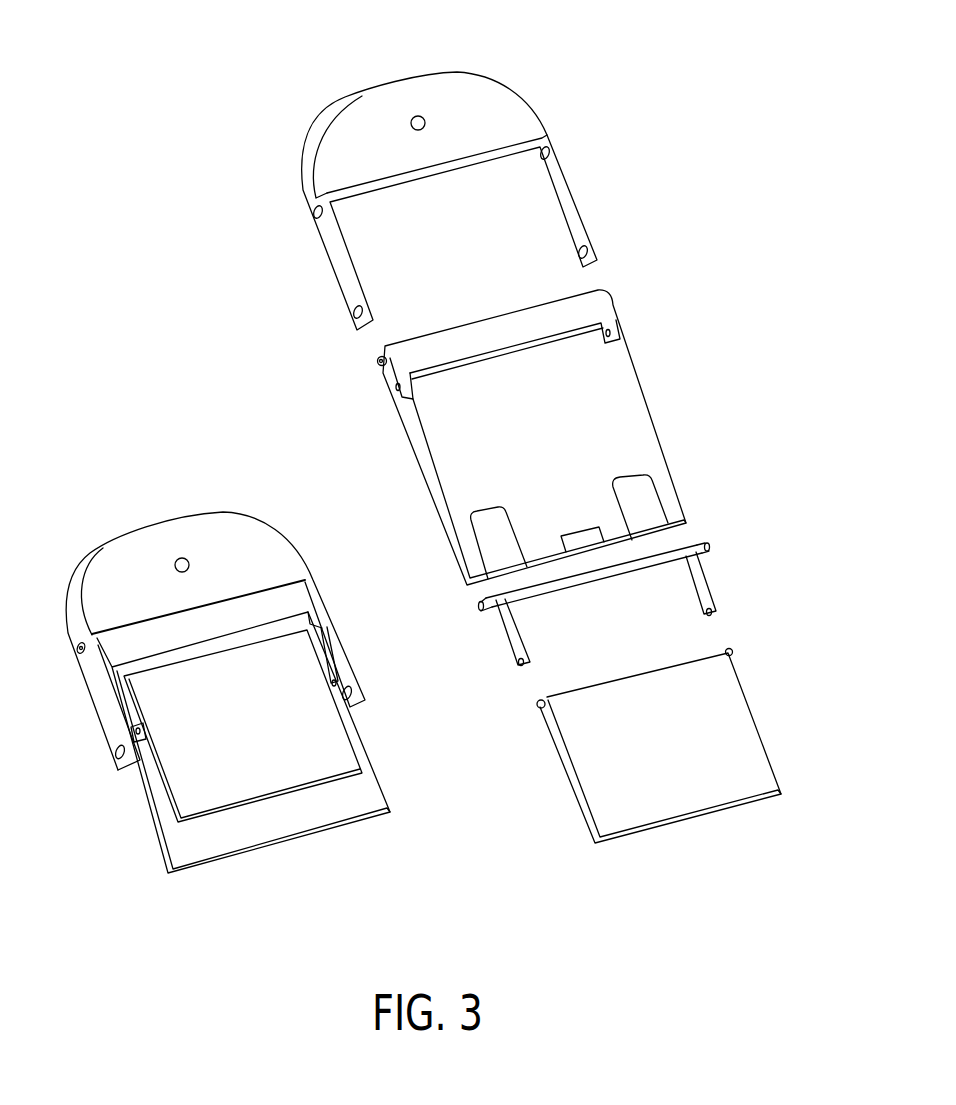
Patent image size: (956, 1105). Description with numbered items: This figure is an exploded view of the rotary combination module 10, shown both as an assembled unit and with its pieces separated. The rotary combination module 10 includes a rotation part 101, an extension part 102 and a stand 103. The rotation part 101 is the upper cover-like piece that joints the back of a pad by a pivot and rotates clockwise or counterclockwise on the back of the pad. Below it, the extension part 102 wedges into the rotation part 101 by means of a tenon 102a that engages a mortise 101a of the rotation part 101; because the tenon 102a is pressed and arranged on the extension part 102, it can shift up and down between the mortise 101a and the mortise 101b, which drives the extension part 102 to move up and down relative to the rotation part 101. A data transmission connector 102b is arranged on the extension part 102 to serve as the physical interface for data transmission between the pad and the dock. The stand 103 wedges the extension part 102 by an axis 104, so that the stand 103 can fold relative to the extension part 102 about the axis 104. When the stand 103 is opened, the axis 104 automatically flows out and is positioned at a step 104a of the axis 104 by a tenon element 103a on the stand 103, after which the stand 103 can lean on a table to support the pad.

The rotary combination module 10 is at (199, 513).
The rotation part 101 is at (517, 105).
The mortise 101a is at (545, 149).
The mortise 101b is at (587, 249).
The extension part 102 is at (605, 308).
The tenon 102a is at (377, 362).
The data transmission connector 102b is at (650, 498).
The stand 103 is at (737, 705).
The tenon element 103a is at (760, 640).
The axis 104 is at (682, 551).
The step 104a is at (711, 613).